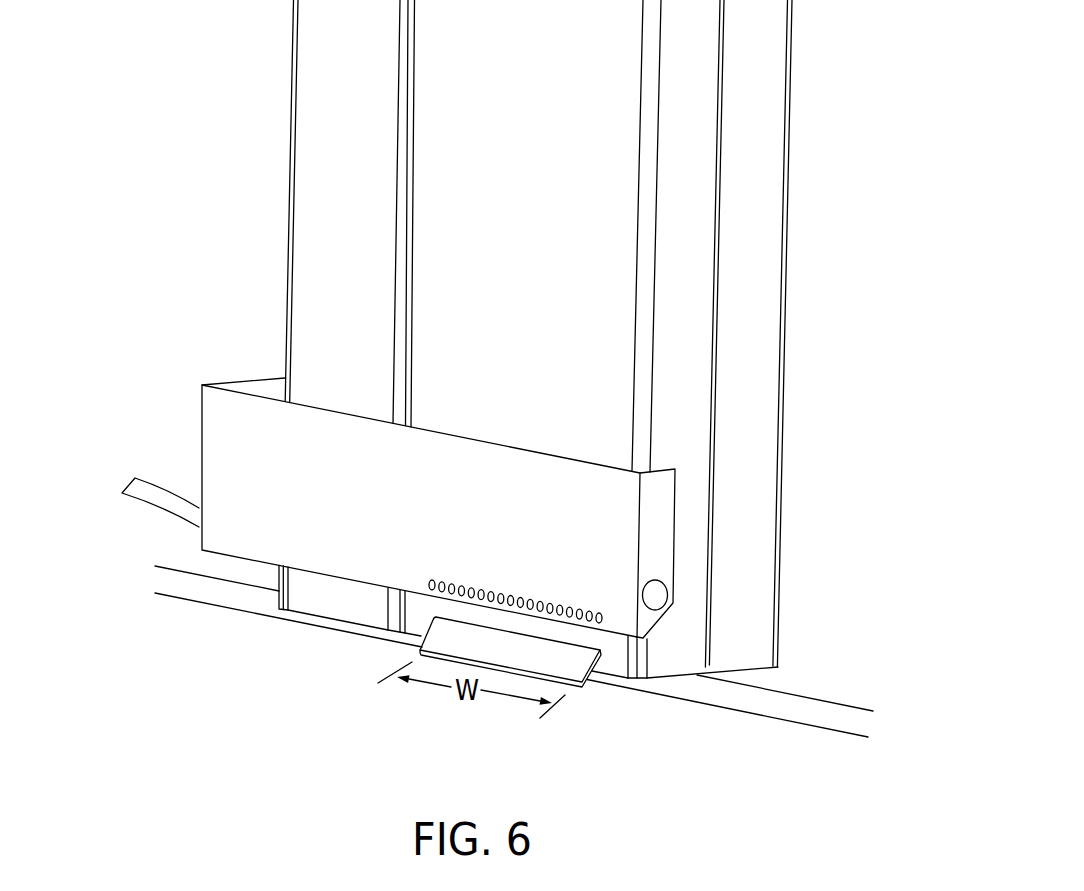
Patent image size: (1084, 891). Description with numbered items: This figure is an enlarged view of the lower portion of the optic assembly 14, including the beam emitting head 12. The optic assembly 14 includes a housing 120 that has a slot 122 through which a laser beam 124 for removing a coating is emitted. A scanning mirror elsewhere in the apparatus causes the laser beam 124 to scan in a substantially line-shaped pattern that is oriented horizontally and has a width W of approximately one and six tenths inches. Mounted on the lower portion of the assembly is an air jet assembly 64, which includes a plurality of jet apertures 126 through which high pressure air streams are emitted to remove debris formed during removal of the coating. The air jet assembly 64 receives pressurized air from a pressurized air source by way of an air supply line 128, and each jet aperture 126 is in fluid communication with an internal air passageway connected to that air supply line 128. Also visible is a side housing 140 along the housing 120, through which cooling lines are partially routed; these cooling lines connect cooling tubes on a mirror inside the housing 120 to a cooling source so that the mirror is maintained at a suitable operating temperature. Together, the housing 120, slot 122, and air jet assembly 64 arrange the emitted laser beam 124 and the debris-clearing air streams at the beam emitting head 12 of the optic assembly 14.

The beam emitting head 12 is at (806, 578).
The optic assembly 14 is at (299, 316).
The air jet assembly 64 is at (247, 382).
The housing 120 is at (750, 142).
The slot 122 is at (433, 621).
The laser beam 124 is at (584, 692).
The jet apertures 126 is at (610, 614).
The air supply line 128 is at (131, 509).
The side housing 140 is at (310, 163).